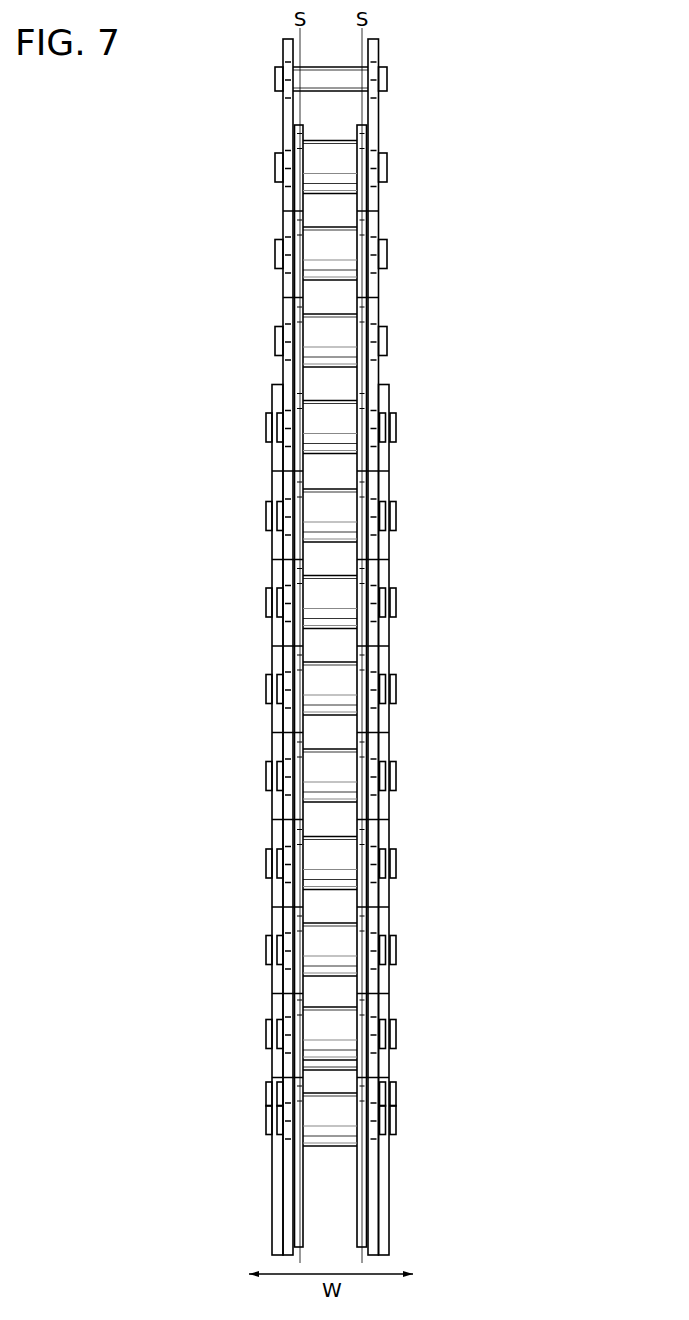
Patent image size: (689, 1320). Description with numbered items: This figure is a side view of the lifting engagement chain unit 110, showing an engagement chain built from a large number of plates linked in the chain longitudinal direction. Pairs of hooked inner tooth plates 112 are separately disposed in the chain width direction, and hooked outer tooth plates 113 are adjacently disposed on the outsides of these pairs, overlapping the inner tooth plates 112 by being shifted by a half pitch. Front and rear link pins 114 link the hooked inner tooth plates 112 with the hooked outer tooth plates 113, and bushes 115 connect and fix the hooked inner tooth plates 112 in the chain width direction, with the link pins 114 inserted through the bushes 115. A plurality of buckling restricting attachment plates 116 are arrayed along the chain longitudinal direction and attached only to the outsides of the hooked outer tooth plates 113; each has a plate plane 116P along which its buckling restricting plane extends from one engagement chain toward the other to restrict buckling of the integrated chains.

The lifting engagement chain unit 110 is at (476, 76).
The hooked inner tooth plate 112 is at (287, 460).
The hooked outer tooth plate 113 is at (285, 718).
The link pin 114 is at (266, 865).
The bush 115 is at (345, 510).
The buckling restricting attachment plate 116 is at (278, 896).
The plate plane 116P is at (268, 463).